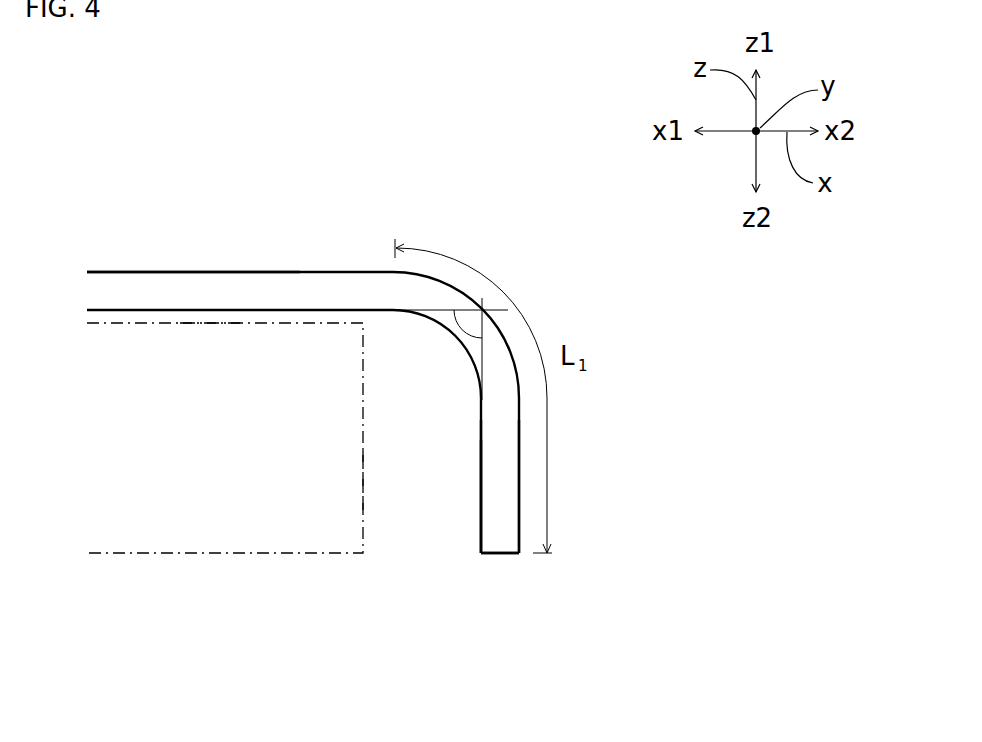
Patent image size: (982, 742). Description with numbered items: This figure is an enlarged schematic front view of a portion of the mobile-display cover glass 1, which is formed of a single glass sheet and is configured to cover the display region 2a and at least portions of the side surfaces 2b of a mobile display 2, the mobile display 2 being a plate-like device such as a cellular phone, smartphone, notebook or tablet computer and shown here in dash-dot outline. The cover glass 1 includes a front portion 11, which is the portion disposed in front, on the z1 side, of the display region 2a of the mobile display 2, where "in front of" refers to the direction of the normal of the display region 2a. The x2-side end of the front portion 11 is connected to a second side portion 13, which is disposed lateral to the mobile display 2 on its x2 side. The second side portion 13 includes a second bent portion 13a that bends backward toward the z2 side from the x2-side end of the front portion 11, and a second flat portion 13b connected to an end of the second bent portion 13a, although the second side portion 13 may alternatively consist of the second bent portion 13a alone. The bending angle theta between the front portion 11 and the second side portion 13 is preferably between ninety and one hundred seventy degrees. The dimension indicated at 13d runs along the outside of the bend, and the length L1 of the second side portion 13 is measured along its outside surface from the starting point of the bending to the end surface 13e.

The mobile-display cover glass 1 is at (240, 270).
The front portion 11 is at (122, 270).
The mobile display 2 is at (202, 553).
The display region 2a is at (210, 320).
The side surfaces 2b is at (363, 481).
The second side portion 13 is at (502, 558).
The second bent portion 13a is at (478, 334).
The second flat portion 13b is at (482, 533).
The bend radius extent 13d is at (465, 372).
The end surface 13e is at (518, 556).